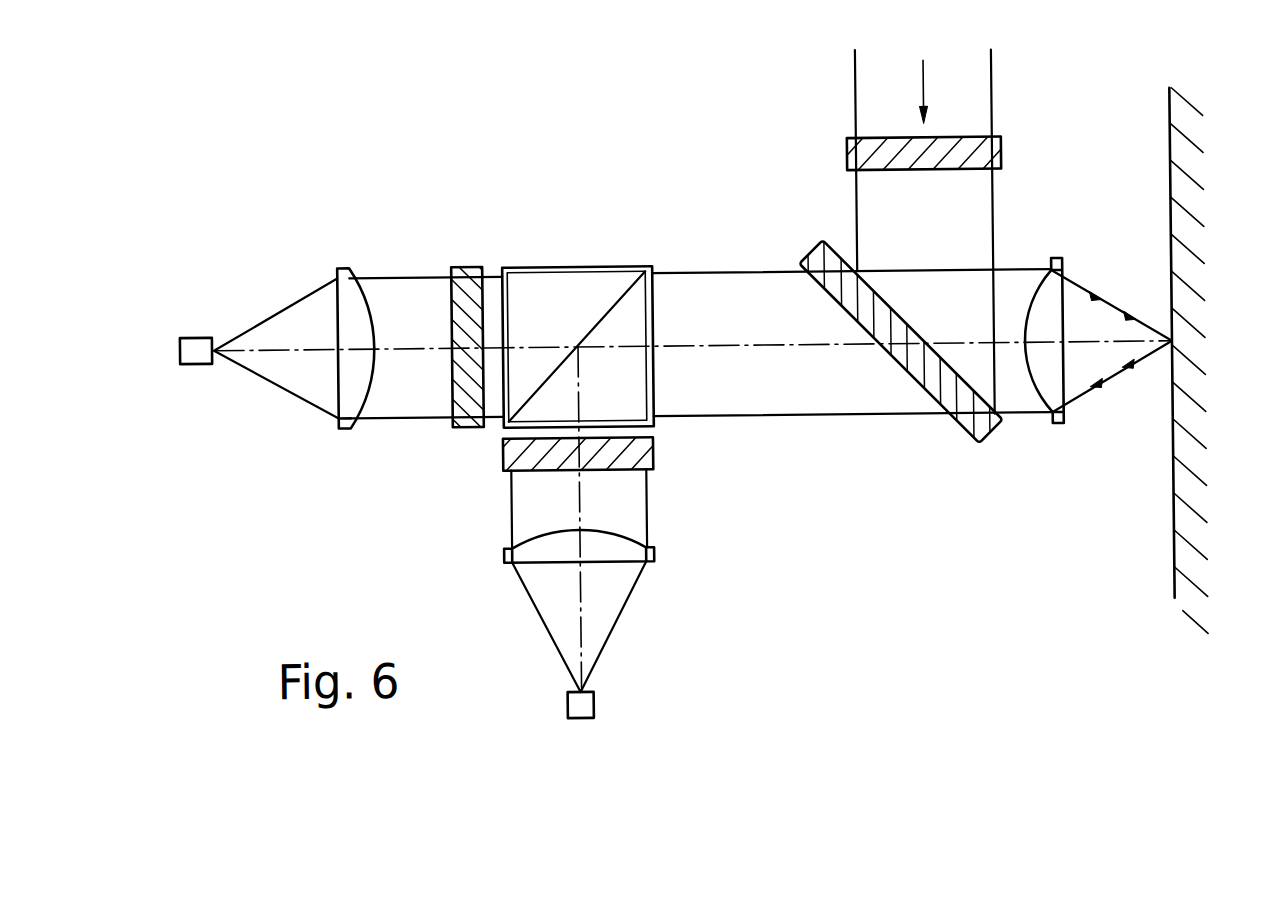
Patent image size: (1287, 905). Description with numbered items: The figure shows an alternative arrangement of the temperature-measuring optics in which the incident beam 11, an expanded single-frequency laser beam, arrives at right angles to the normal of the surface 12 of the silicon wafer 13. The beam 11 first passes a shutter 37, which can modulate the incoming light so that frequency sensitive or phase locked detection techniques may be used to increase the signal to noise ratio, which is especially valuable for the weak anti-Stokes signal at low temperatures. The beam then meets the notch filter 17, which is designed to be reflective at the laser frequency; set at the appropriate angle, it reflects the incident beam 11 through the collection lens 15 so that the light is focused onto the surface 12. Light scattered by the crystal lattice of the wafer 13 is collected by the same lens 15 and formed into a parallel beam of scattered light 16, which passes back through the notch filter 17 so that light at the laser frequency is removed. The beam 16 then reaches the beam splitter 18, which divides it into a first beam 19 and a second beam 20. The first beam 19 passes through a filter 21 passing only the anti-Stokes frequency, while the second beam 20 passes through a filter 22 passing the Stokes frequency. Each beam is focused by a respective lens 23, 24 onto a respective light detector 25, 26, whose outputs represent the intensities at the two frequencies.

The beam of single frequency light 11 is at (980, 114).
The surface 12 is at (1170, 547).
The silicon wafer 13 is at (1187, 534).
The collection lens 15 is at (1051, 427).
The parallel beam of scattered light 16 is at (799, 402).
The notch filter 17 is at (943, 397).
The beam splitter 18 is at (623, 264).
The first beam 19 is at (408, 285).
The second beam 20 is at (625, 522).
The filter 21 is at (471, 267).
The filter 22 is at (526, 462).
The lens 23 is at (344, 426).
The lens 24 is at (511, 563).
The light detector 25 is at (195, 356).
The light detector 26 is at (590, 705).
The shutter 37 is at (867, 155).